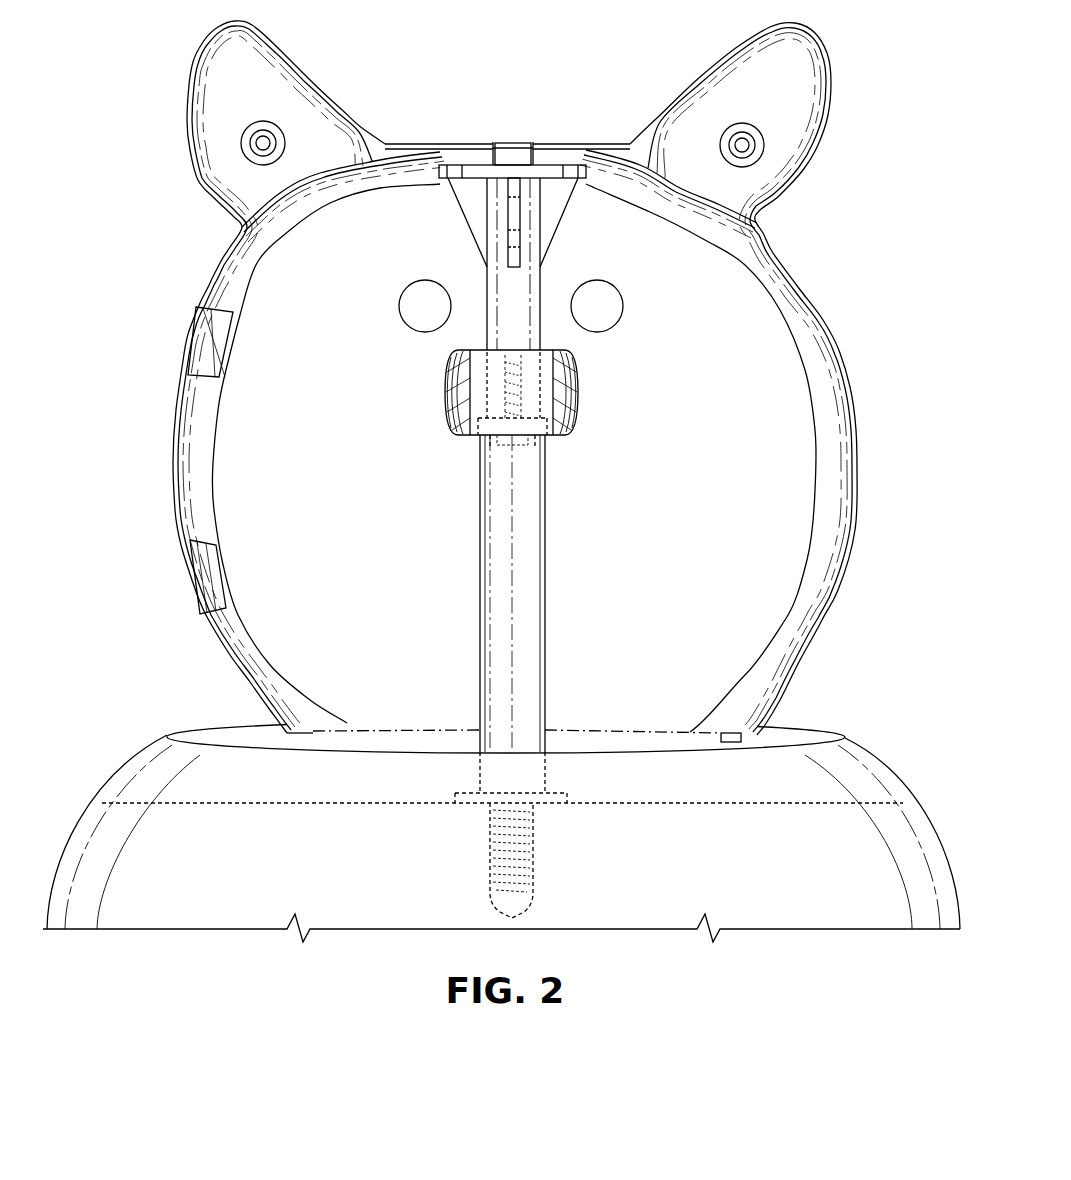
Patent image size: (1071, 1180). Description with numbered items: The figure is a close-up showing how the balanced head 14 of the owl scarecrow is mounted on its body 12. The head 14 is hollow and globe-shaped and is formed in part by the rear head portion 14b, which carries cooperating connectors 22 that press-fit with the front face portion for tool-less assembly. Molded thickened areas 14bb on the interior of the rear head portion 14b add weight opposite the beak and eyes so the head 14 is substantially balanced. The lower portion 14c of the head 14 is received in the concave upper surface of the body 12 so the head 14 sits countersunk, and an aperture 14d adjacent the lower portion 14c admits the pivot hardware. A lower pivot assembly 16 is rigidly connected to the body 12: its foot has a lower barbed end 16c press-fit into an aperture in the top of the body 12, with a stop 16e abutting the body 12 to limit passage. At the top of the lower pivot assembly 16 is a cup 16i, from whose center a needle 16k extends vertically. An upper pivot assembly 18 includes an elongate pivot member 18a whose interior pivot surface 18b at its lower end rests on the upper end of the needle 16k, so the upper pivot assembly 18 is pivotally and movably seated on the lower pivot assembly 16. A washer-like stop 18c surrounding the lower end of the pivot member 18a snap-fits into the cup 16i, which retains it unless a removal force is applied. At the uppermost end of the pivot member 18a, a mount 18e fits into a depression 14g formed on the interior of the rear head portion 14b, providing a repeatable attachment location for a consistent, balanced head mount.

The scarecrow body 12 is at (120, 765).
The balanced head 14 is at (855, 337).
The rear head portion 14b is at (212, 268).
The thickened areas 14bb is at (401, 300).
The lower portion of the head 14c is at (757, 738).
The aperture 14d is at (354, 690).
The depression 14g is at (498, 140).
The lower pivot assembly 16 is at (470, 568).
The lower barbed end 16c is at (490, 862).
The stop 16e is at (560, 793).
The cup 16i is at (448, 378).
The needle 16k is at (532, 440).
The upper pivot assembly 18 is at (450, 260).
The elongate pivot member 18a is at (541, 285).
The interior pivot surface 18b is at (565, 425).
The stop 18c is at (493, 440).
The mount 18e is at (522, 141).
The cooperating connectors 22 is at (221, 590).